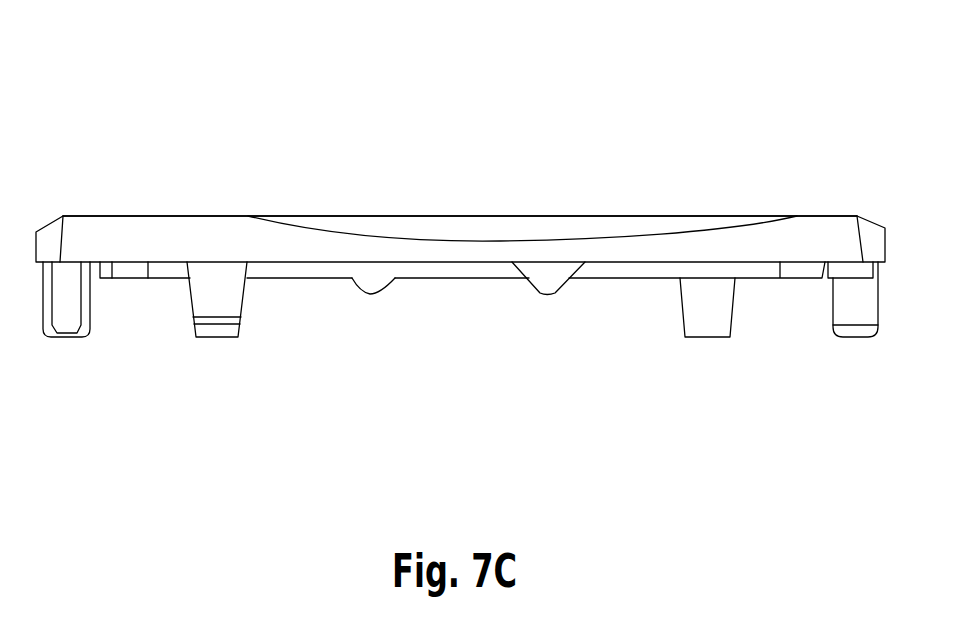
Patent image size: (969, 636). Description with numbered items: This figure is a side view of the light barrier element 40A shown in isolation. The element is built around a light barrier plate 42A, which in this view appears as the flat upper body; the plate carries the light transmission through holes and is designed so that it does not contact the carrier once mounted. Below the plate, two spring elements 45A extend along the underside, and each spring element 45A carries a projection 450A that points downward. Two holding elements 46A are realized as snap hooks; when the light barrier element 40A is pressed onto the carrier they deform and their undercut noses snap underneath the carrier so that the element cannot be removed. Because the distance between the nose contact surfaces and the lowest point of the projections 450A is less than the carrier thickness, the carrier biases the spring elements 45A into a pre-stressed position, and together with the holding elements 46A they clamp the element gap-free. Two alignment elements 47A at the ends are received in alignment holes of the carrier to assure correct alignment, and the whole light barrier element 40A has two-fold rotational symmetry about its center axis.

The light barrier element 40A is at (448, 158).
The light barrier plate 42A is at (585, 216).
The spring element 45A is at (330, 216).
The holding element 46A is at (202, 338).
The alignment element 47A is at (58, 338).
The projection 450A is at (370, 295).